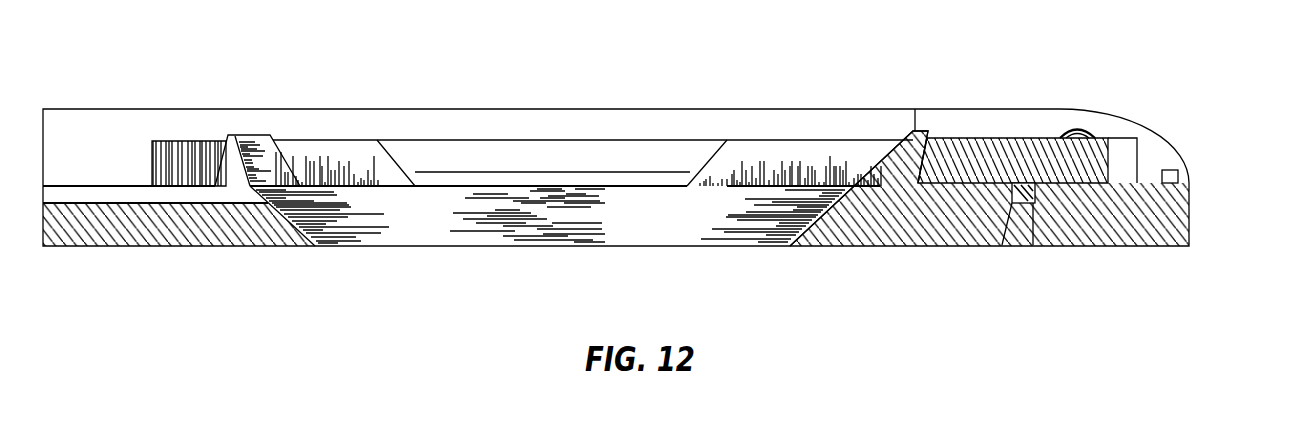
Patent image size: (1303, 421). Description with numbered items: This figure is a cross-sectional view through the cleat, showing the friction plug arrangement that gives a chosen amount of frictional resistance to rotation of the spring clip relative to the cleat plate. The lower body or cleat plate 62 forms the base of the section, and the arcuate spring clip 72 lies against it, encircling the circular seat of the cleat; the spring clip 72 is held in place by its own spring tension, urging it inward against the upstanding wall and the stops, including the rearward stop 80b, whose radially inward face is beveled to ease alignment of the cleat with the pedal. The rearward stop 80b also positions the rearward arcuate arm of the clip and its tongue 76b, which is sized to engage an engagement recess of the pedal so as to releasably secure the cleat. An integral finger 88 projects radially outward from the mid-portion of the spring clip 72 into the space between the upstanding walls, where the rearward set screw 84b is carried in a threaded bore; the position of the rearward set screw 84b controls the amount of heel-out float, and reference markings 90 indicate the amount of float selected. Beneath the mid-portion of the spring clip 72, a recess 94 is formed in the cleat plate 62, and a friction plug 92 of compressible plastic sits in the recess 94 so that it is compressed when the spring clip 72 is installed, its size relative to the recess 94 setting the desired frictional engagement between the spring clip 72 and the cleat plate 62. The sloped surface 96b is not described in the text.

The lower plate 62 is at (1175, 212).
The spring clip 72 is at (335, 150).
The tongue 76b is at (552, 150).
The rearward stop 80b is at (252, 142).
The rearward set screw 84b is at (1078, 132).
The integral finger 88 is at (992, 137).
The reference markings 90 is at (1168, 168).
The friction plug 92 is at (1035, 242).
The recess 94 is at (1005, 242).
The sloped sidewall 96b is at (960, 123).